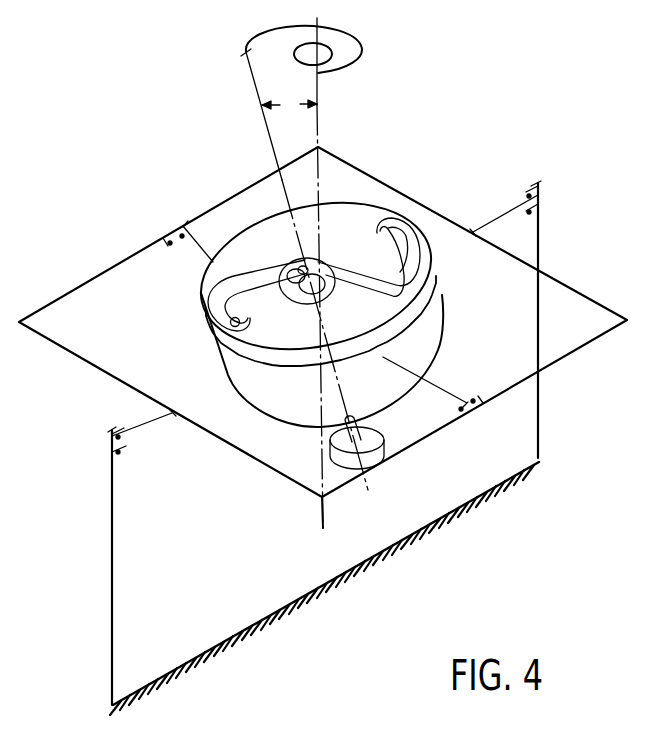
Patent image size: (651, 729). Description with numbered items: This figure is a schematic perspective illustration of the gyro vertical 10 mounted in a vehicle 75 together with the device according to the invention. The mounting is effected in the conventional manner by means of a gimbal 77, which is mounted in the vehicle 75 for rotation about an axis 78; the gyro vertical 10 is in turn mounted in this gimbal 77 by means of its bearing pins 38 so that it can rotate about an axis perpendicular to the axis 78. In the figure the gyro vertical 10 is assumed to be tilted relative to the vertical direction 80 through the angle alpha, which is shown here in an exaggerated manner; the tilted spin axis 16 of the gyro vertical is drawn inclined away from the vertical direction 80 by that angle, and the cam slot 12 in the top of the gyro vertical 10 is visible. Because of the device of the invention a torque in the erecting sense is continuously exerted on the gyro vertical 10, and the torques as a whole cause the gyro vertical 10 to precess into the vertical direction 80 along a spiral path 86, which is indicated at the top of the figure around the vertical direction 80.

The gyro vertical 10 is at (226, 370).
The cam slot 12 is at (393, 208).
The spin axis 16 is at (256, 96).
The pivot bearing 38 is at (187, 240).
The vehicle 75 is at (188, 661).
The gimbal 77 is at (360, 170).
The axis 78 is at (152, 428).
The vertical direction 80 is at (325, 118).
The spiral path 86 is at (352, 28).